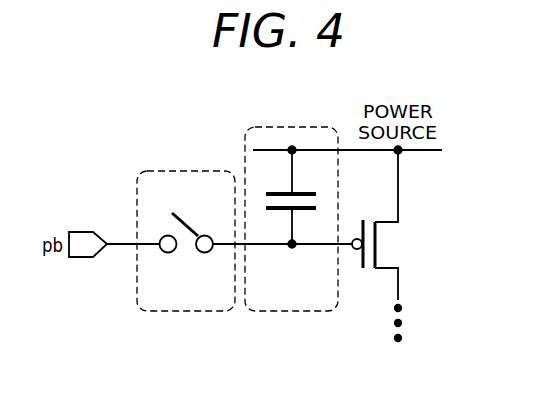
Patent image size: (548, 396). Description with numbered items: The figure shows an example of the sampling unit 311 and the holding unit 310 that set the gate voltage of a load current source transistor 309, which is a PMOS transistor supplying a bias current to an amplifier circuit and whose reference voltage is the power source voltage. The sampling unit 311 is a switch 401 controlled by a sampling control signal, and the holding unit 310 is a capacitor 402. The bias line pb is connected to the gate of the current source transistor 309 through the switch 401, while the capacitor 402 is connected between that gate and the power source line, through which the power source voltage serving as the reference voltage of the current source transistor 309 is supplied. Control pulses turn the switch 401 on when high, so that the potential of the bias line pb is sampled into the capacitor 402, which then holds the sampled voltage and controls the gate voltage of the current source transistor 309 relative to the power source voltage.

The current source transistor 309 is at (392, 246).
The holding unit 310 is at (288, 312).
The sampling unit 311 is at (182, 312).
The switch 401 is at (187, 253).
The capacitor 402 is at (318, 203).